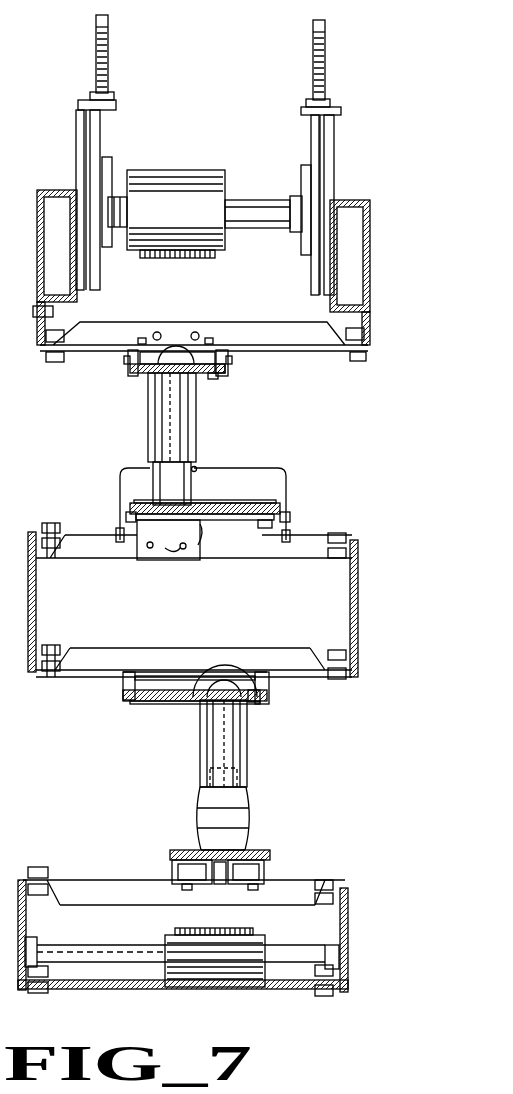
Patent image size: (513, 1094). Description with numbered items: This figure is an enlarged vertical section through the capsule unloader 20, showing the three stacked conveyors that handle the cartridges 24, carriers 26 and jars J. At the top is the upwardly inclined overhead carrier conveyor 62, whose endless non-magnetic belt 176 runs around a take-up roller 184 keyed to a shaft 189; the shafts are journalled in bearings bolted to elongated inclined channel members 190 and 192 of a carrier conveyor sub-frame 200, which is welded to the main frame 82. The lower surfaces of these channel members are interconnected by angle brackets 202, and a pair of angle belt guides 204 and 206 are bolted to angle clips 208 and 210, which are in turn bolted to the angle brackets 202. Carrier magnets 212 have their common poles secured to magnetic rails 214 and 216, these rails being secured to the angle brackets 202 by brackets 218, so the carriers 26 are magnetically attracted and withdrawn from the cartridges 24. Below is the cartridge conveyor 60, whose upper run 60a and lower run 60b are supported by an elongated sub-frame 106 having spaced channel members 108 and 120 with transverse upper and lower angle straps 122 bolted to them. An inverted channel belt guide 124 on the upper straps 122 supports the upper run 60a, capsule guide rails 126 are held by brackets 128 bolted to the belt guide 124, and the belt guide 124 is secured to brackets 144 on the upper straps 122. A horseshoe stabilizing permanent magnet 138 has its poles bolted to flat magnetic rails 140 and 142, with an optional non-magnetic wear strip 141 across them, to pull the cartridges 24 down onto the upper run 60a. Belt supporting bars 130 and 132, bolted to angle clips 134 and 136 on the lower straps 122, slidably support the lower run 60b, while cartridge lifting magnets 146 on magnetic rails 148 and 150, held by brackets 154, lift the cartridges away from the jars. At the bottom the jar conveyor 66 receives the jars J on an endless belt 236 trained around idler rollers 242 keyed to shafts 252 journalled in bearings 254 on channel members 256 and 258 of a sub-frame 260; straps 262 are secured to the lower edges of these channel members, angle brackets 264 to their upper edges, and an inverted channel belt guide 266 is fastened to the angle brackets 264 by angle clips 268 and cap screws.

The capsule unloader 20 is at (357, 118).
The cartridge 24 is at (155, 488).
The carrier 26 is at (200, 420).
The cartridge conveyor 60 is at (263, 504).
The upper run of cartridge conveyor 60a is at (222, 492).
The lower run of cartridge conveyor 60b is at (165, 701).
The carrier conveyor 62 is at (224, 258).
The jar conveyor 66 is at (260, 850).
The frame 82 is at (353, 538).
The sub-frame 106 is at (36, 593).
The channel member 108 is at (36, 612).
The channel member 120 is at (350, 578).
The angle straps 122 is at (90, 522).
The belt guide 124 is at (265, 515).
The capsule guide rails 126 is at (125, 468).
The brackets 128 is at (120, 480).
The belt supporting bar 130 is at (125, 702).
The belt supporting bar 132 is at (268, 702).
The angle clip 134 is at (123, 688).
The angle clip 136 is at (268, 672).
The stabilizing permanent magnet 138 is at (185, 548).
The magnetic rail 140 is at (138, 528).
The non-magnetic wear strip 141 is at (198, 532).
The magnetic rail 142 is at (198, 514).
The brackets 144 is at (145, 553).
The cartridge lifting magnet 146 is at (212, 665).
The magnetic rail 148 is at (205, 675).
The magnetic rail 150 is at (260, 704).
The brackets 154 is at (235, 685).
The belt 176 is at (160, 256).
The take-up roller 184 is at (224, 172).
The shaft 189 is at (260, 206).
The channel member 190 is at (48, 195).
The channel member 192 is at (368, 194).
The carrier conveyor sub-frame 200 is at (362, 342).
The angle brackets 202 is at (268, 340).
The angle belt guide 204 is at (136, 366).
The angle belt guide 206 is at (220, 368).
The angle clip 208 is at (128, 354).
The angle clip 210 is at (224, 354).
The carrier magnet 212 is at (150, 333).
The magnetic rail 214 is at (147, 382).
The magnetic rail 216 is at (212, 380).
The brackets 218 is at (178, 350).
The belt 236 is at (188, 852).
The idler rollers 242 is at (245, 962).
The shafts 252 is at (75, 955).
The bearings 254 is at (36, 935).
The channel member 256 is at (26, 918).
The channel member 258 is at (340, 922).
The sub-frame 260 is at (22, 882).
The straps 262 is at (175, 988).
The angle brackets 264 is at (78, 892).
The belt guide 266 is at (266, 862).
The angle clips 268 is at (175, 868).
The jar J is at (234, 798).